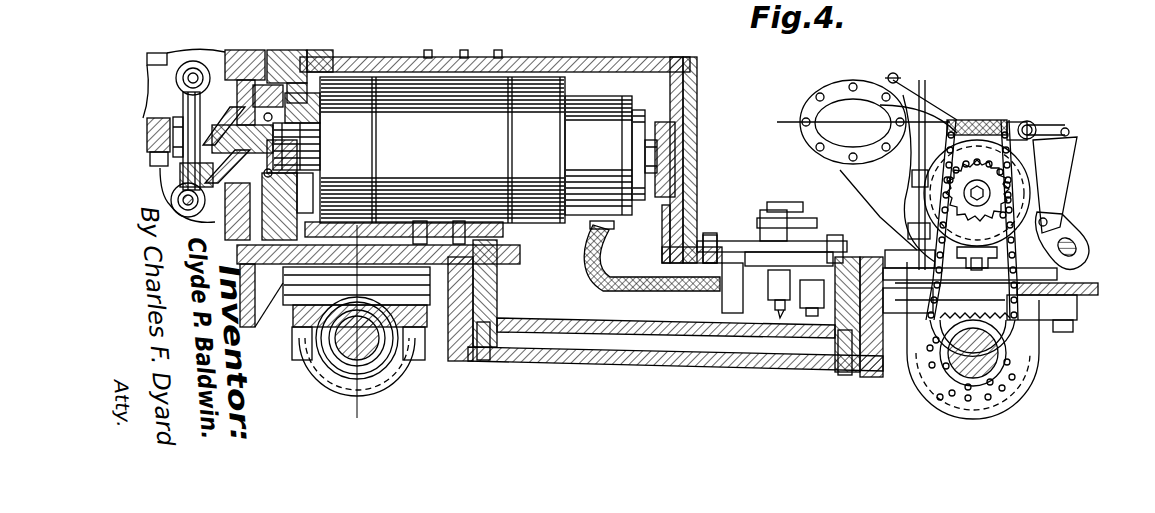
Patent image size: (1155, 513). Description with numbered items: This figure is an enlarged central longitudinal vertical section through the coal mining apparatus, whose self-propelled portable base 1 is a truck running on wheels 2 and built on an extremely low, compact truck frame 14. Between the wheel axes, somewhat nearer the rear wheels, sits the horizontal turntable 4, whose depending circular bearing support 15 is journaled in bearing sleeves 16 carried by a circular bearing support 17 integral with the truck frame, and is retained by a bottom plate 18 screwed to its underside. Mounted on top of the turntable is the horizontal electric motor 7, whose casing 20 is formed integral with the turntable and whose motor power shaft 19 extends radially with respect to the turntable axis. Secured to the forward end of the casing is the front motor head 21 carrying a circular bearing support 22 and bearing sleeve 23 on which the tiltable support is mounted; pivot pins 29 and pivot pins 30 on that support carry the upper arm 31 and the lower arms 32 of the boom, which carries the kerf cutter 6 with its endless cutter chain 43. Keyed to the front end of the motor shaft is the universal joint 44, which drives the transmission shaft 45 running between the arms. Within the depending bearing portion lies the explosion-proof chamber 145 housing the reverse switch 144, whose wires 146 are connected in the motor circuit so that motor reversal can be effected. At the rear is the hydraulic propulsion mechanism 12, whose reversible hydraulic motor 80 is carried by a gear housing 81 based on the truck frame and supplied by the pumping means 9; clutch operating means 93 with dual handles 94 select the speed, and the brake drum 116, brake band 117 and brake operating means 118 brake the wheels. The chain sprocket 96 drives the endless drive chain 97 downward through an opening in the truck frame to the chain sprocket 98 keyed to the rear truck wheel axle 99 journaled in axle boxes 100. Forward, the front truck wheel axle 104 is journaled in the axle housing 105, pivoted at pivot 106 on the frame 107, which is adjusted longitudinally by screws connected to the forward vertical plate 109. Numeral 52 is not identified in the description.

The self-propelled portable base 1 is at (933, 92).
The wheels 2 is at (395, 387).
The turntable 4 is at (853, 253).
The kerf cutter 6 is at (343, 415).
The motor 7 is at (523, 58).
The pumping means 9 is at (787, 108).
The propulsion mechanism 12 is at (870, 82).
The truck frame 14 is at (1098, 290).
The circular bearing support 15 is at (868, 377).
The bearing sleeves 16 is at (460, 300).
The circular bearing support 17 is at (460, 362).
The bottom plate 18 is at (703, 367).
The motor power shaft 19 is at (290, 87).
The motor casing 20 is at (667, 63).
The front motor head 21 is at (298, 54).
The circular bearing support 22 is at (250, 85).
The bearing sleeve 23 is at (243, 77).
The pivot pins 29 is at (193, 78).
The pivot pins 30 is at (176, 200).
The upper arm 31 is at (152, 53).
The lower arms 32 is at (160, 178).
The cutter chain 43 is at (615, 15).
The universal joint 44 is at (186, 110).
The transmission shaft 45 is at (150, 125).
The member 52 is at (572, 7).
The hydraulic motor 80 is at (832, 88).
The gear housing 81 is at (967, 116).
The operating means 93 is at (905, 203).
The dual handles 94 is at (898, 78).
The chain sprocket 96 is at (997, 206).
The drive chain 97 is at (1075, 263).
The chain sprocket 98 is at (1010, 341).
The rear truck wheel axle 99 is at (1010, 370).
The axle boxes 100 is at (1067, 315).
The front truck wheel axle 104 is at (335, 347).
The axle housing 105 is at (318, 372).
The pivot 106 is at (300, 337).
The frame 107 is at (498, 265).
The forward vertical plate 109 is at (240, 313).
The brake drum 116 is at (1030, 122).
The brake band 117 is at (1032, 145).
The operating means 118 is at (1078, 148).
The reverse switch 144 is at (760, 248).
The chamber 145 is at (680, 313).
The wires 146 is at (633, 293).